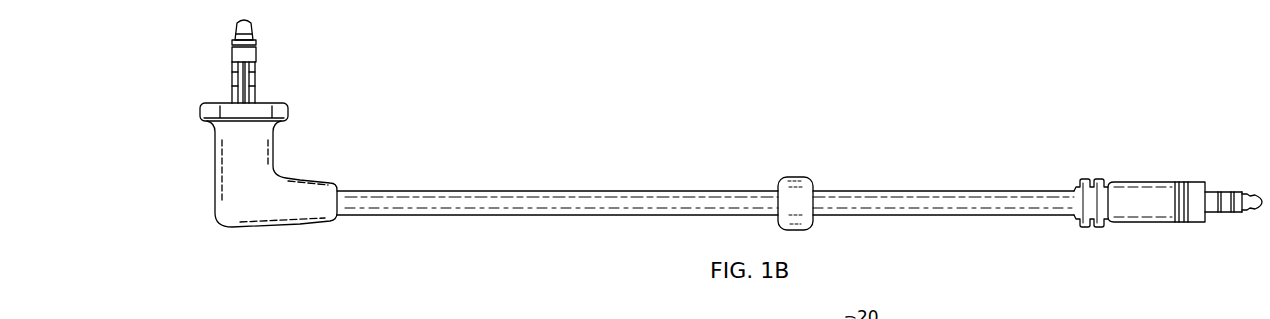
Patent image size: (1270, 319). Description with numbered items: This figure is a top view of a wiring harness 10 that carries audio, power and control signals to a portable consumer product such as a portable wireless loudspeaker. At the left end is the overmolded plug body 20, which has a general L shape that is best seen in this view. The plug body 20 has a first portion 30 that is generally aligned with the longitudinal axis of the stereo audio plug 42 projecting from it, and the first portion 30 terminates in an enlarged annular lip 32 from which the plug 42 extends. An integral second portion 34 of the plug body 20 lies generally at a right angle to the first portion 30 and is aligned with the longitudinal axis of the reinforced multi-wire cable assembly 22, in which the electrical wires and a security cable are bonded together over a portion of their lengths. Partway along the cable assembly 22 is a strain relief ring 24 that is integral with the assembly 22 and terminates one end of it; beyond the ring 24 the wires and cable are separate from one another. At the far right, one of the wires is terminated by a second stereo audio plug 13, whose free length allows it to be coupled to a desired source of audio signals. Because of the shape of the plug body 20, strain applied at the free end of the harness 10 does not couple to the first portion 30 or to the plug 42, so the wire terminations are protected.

The wiring harness 10 is at (867, 147).
The stereo audio plug 13 is at (1137, 183).
The plug body 20 is at (263, 230).
The reinforced multi-wire cable assembly 22 is at (699, 190).
The ring 24 is at (790, 178).
The first portion 30 is at (265, 153).
The enlarged annular lip 32 is at (287, 111).
The second portion 34 is at (327, 216).
The stereo audio plug 42 is at (253, 58).